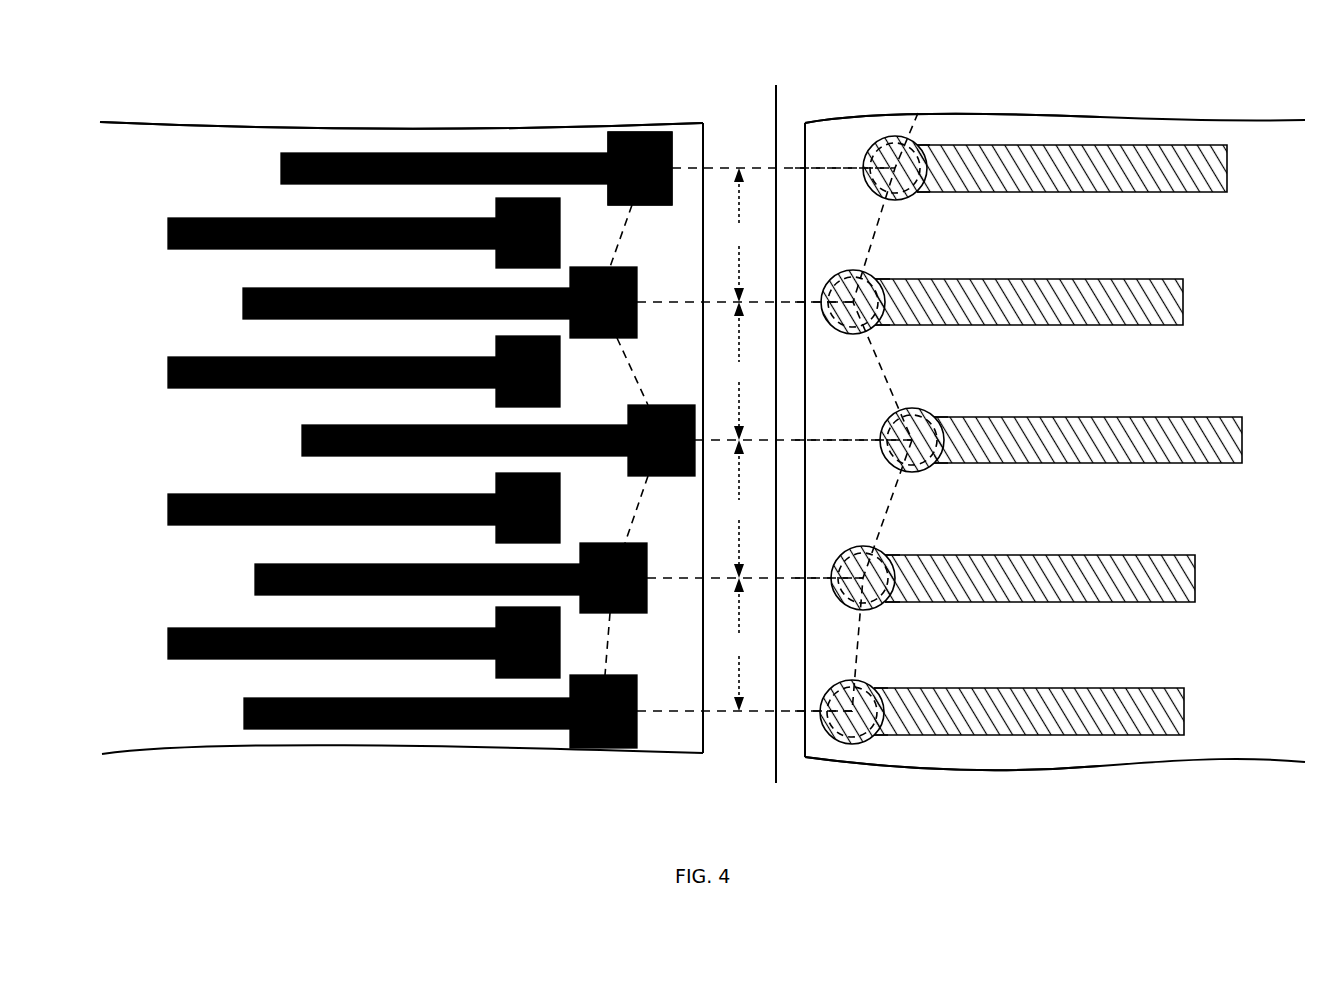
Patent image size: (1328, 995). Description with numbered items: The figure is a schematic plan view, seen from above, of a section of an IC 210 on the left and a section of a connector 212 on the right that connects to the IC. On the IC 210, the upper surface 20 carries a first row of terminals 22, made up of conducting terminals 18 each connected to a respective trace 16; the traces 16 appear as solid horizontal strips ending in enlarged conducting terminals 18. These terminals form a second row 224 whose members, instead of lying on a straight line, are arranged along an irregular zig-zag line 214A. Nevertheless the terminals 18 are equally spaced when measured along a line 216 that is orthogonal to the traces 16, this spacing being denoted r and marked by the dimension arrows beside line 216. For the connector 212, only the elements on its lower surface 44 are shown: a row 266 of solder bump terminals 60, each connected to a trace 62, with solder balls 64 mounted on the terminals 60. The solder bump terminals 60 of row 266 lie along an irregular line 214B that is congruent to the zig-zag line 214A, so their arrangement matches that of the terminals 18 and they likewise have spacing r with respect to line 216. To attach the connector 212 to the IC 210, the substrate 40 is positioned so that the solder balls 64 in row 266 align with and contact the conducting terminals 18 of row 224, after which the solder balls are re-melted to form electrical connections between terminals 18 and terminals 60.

The traces 16 is at (281, 170).
The conducting terminals 18 is at (620, 205).
The upper surface 20 is at (357, 140).
The first row of terminals 22 is at (527, 108).
The second row of terminals 224 is at (642, 100).
The IC 210 is at (195, 138).
The irregular zig-zag line 214A is at (654, 134).
The irregular line 214B is at (918, 112).
The line orthogonal to traces 216 is at (776, 778).
The substrate 40 is at (1103, 127).
The lower surface 44 is at (982, 86).
The connector 212 is at (1188, 127).
The solder bump terminals 60 is at (908, 201).
The traces 62 is at (1228, 170).
The solder balls 64 is at (923, 183).
The row of solder bump terminals 266 is at (862, 787).